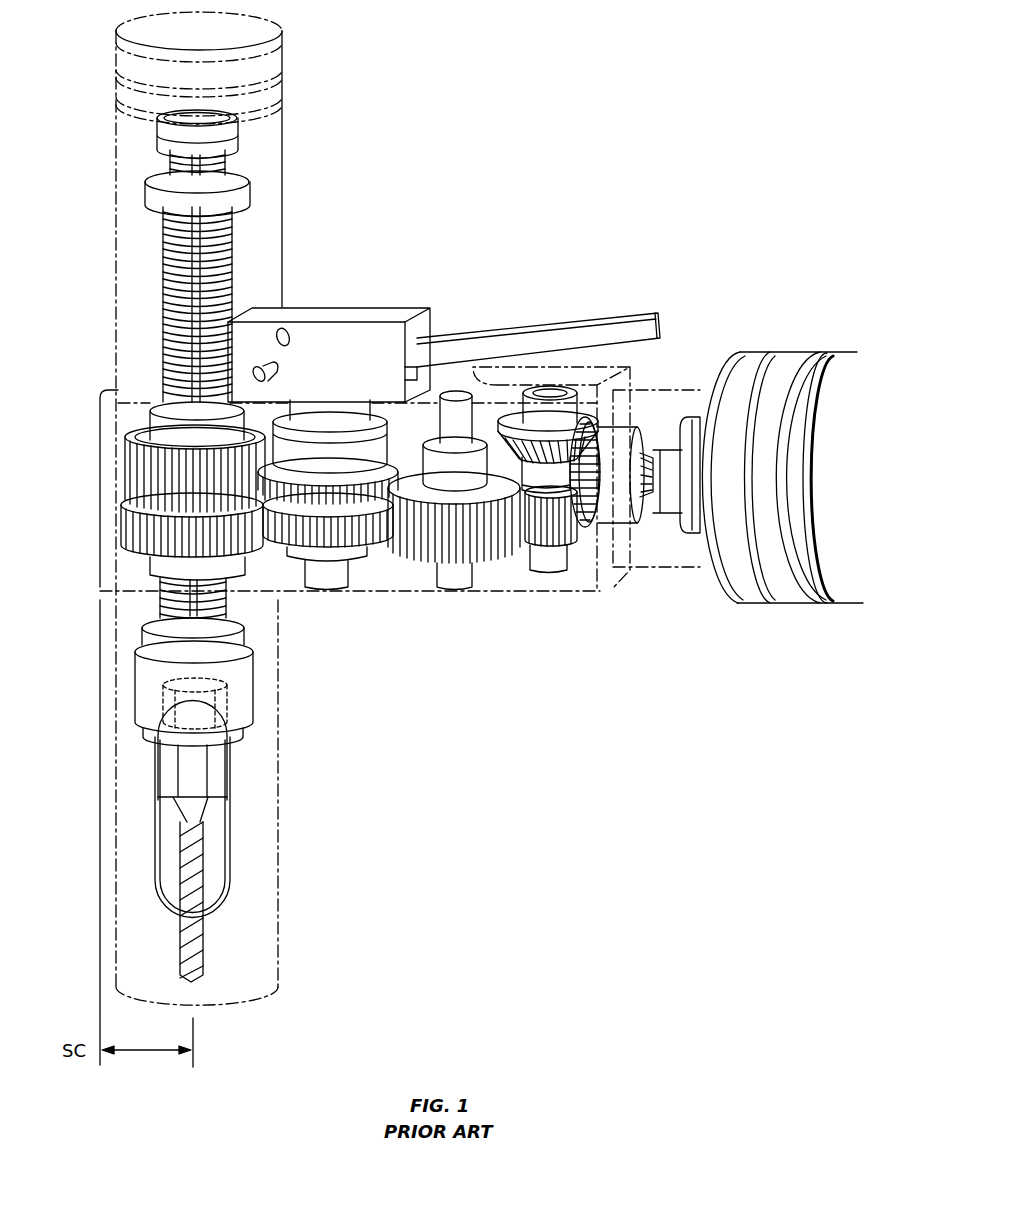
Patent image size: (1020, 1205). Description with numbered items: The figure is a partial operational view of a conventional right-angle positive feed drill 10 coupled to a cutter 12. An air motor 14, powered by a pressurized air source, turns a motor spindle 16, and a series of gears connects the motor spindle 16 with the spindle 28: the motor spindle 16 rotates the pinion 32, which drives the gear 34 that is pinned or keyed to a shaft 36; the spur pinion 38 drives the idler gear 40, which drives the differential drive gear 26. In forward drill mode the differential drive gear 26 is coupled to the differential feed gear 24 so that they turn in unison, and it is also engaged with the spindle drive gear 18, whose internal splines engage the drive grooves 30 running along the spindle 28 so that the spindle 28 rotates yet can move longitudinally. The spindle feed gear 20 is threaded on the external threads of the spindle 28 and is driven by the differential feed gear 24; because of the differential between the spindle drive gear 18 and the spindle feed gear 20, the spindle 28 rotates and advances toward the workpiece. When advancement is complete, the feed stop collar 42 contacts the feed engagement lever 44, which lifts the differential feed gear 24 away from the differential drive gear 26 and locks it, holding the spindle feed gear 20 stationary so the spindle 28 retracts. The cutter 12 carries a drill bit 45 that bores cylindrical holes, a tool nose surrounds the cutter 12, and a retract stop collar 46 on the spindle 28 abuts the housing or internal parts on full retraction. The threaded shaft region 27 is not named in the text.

The right-angle positive feed drill 10 is at (475, 178).
The cutter 12 is at (240, 750).
The air motor 14 is at (849, 360).
The motor spindle 16 is at (660, 505).
The spindle drive gear 18 is at (138, 537).
The spindle feed gear 20 is at (132, 463).
The differential feed gear 24 is at (400, 480).
The differential drive gear 26 is at (355, 538).
The threaded shaft 27 is at (163, 360).
The spindle 28 is at (226, 270).
The drive grooves 30 is at (197, 284).
The pinion 32 is at (594, 528).
The gear 34 is at (598, 414).
The shaft 36 is at (546, 566).
The spur pinion 38 is at (540, 548).
The idler gear 40 is at (479, 552).
The feed stop collar 42 is at (244, 198).
The feed engagement lever 44 is at (568, 332).
The drill bit 45 is at (207, 936).
The retract stop collar 46 is at (150, 690).